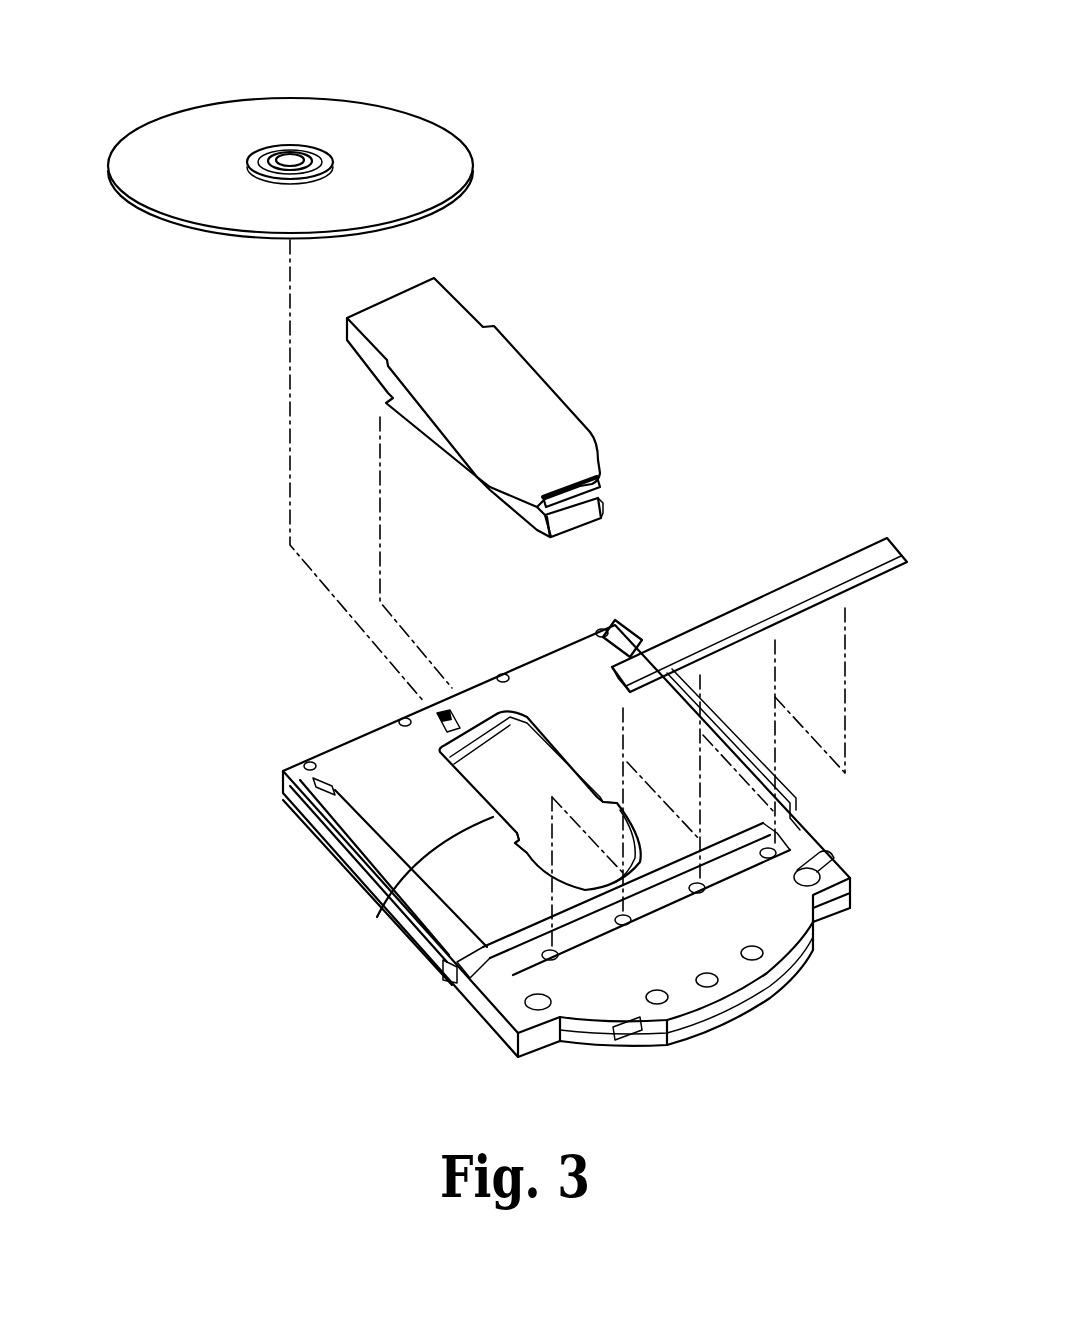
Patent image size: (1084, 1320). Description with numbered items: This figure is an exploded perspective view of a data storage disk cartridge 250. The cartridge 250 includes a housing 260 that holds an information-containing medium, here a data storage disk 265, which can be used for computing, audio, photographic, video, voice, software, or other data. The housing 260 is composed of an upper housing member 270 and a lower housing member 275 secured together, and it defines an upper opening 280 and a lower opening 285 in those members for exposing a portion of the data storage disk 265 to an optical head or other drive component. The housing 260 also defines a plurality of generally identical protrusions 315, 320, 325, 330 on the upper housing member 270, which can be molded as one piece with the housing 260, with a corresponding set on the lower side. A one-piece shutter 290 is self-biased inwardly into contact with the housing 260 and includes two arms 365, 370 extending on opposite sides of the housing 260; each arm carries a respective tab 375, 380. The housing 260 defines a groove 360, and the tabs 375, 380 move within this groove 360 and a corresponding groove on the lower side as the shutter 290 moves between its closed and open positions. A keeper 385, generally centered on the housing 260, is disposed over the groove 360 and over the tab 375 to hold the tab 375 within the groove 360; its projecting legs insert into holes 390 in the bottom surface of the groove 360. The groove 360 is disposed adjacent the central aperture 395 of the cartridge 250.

The cartridge 250 is at (166, 96).
The data storage disk 265 is at (356, 126).
The shutter 290 is at (441, 318).
The arm 365 is at (543, 422).
The arm 370 is at (498, 504).
The tab 375 is at (590, 500).
The tab 380 is at (573, 522).
The keeper 385 is at (831, 580).
The housing 260 is at (300, 765).
The upper housing member 270 is at (338, 816).
The lower housing member 275 is at (333, 861).
The upper opening 280 is at (417, 868).
The lower opening 285 is at (546, 745).
The central aperture 395 is at (528, 855).
The groove 360 is at (488, 972).
The holes 390 is at (553, 958).
The protrusion 315 is at (404, 717).
The protrusion 320 is at (502, 674).
The protrusion 325 is at (311, 762).
The protrusion 330 is at (604, 628).